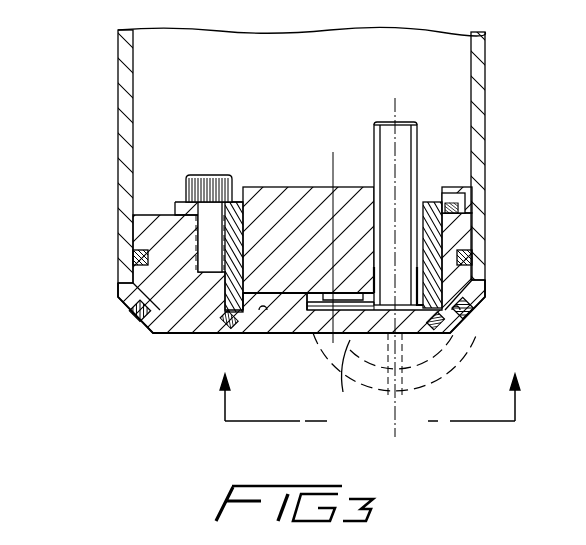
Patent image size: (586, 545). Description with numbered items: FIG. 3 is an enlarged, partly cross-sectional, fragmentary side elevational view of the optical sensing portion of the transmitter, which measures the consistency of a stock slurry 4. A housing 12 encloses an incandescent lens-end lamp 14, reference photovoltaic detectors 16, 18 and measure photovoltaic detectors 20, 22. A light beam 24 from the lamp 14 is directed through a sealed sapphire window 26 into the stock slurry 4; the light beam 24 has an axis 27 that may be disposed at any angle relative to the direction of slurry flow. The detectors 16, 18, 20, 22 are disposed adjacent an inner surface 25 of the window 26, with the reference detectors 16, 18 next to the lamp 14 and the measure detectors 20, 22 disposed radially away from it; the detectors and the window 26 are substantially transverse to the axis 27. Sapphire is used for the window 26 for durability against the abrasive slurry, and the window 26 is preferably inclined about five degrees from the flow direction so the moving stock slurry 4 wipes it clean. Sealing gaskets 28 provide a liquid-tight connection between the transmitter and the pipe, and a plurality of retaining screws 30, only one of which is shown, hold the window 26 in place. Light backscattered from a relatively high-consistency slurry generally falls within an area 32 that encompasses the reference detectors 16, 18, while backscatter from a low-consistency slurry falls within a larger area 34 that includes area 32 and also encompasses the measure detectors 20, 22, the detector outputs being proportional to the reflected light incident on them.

The stock slurry 4 is at (367, 411).
The housing 12 is at (123, 118).
The incandescent lens-end lamp 14 is at (373, 137).
The reference photovoltaic detector 16 is at (359, 381).
The reference photovoltaic detector 18 is at (359, 381).
The measure photovoltaic detector 20 is at (301, 317).
The measure photovoltaic detector 22 is at (318, 337).
The light beam 24 is at (403, 380).
The inner surface 25 is at (250, 318).
The sapphire window 26 is at (287, 323).
The axis 27 is at (396, 111).
The sealing gaskets 28 is at (133, 258).
The retaining screws 30 is at (219, 173).
The area 32 is at (432, 355).
The area 34 is at (443, 383).